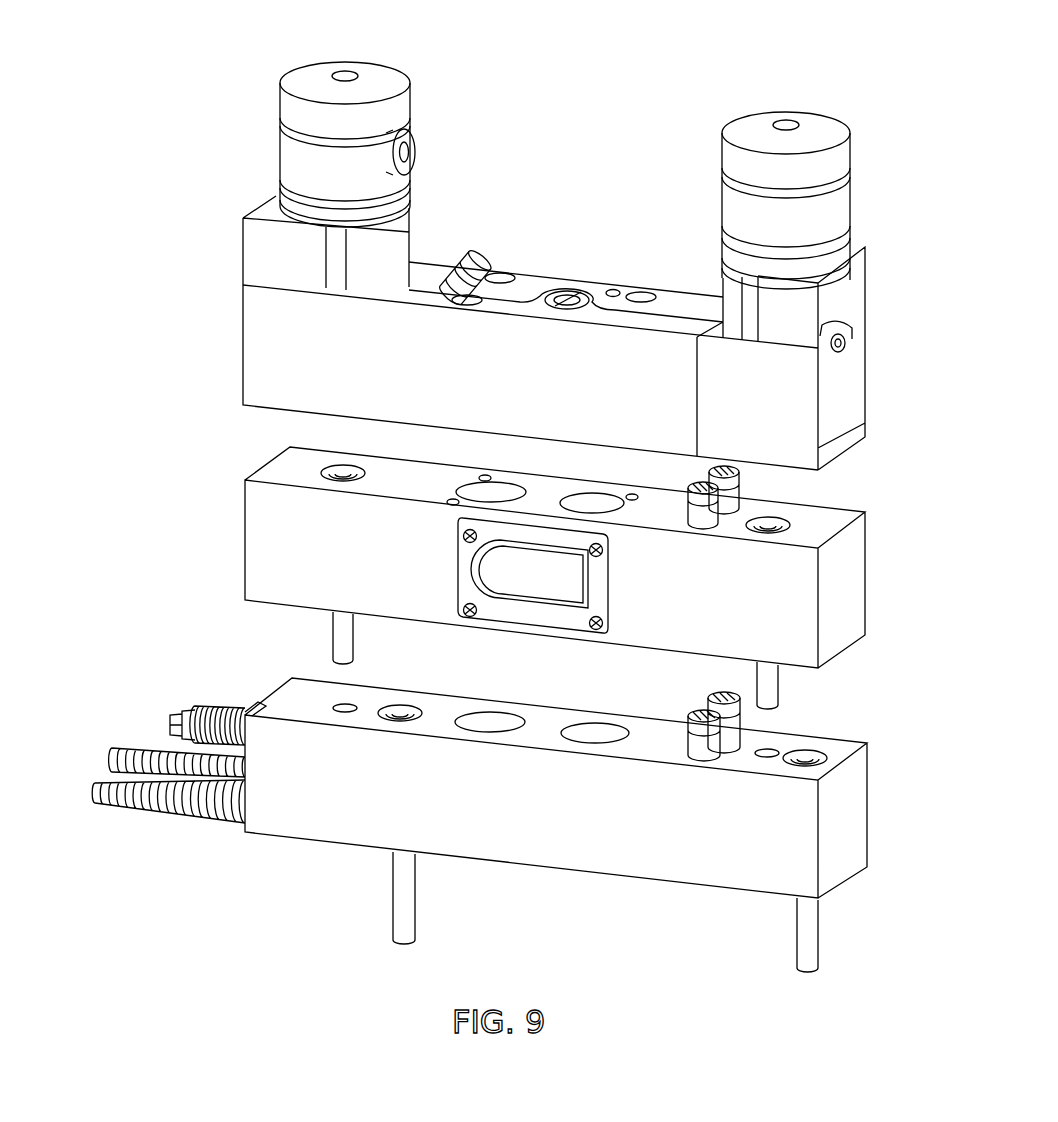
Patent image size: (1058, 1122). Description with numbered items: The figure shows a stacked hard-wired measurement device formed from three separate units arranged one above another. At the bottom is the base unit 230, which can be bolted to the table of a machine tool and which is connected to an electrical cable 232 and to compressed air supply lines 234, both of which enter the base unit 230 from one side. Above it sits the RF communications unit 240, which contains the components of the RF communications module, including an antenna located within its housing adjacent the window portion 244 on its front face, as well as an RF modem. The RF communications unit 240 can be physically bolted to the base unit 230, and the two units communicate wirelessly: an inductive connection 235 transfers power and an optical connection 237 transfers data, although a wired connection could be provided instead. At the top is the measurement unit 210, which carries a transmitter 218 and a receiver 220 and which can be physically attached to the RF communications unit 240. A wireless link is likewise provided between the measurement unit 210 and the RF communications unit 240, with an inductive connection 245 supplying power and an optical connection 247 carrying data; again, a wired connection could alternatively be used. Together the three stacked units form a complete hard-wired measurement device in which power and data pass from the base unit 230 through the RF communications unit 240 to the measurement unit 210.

The measurement unit 210 is at (878, 356).
The transmitter 218 is at (822, 128).
The receiver 220 is at (387, 80).
The base unit 230 is at (850, 835).
The electrical cable 232 is at (168, 720).
The compressed air supply lines 234 is at (125, 792).
The inductive connection 235 is at (500, 722).
The optical connection 237 is at (607, 735).
The RF communications unit 240 is at (853, 597).
The window portion 244 is at (533, 575).
The inductive connection 245 is at (498, 490).
The optical connection 247 is at (600, 503).